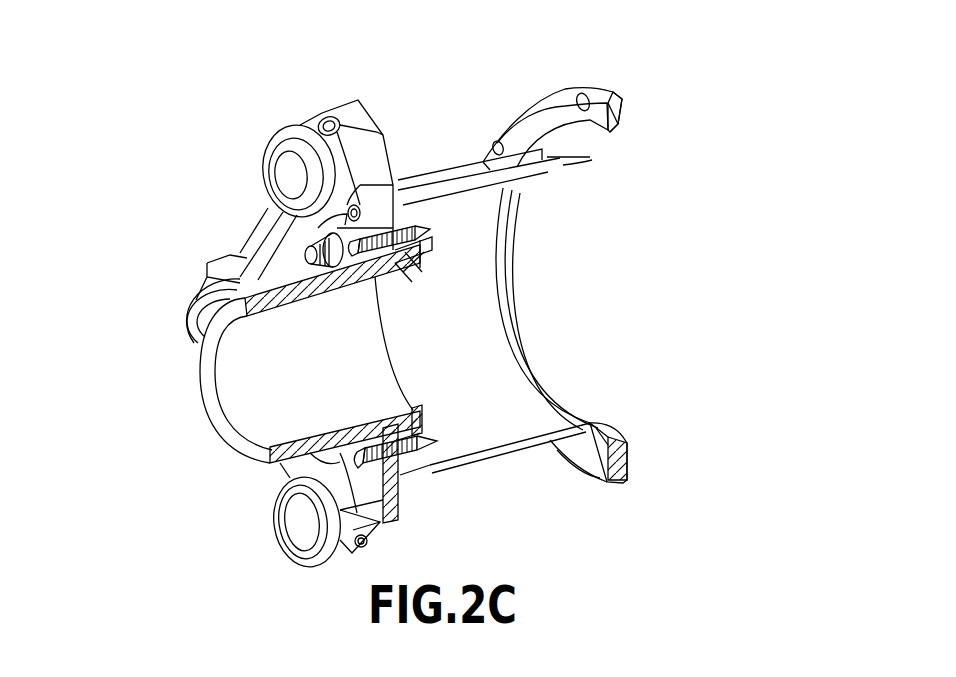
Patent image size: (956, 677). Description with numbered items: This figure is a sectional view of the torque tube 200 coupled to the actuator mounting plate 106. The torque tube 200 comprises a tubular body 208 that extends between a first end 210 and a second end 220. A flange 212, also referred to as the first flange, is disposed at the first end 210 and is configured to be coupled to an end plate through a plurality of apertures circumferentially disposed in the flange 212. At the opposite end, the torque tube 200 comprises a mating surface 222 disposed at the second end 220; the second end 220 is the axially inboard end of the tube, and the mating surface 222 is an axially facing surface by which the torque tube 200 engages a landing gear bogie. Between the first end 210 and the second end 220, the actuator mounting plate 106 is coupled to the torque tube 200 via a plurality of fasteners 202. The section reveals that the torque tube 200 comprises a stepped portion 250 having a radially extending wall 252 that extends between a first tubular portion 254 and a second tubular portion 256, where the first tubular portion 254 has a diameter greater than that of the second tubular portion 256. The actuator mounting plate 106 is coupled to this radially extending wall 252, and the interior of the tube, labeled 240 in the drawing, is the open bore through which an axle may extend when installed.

The actuator mounting plate 106 is at (400, 523).
The torque tube 200 is at (517, 454).
The fasteners 202 is at (433, 229).
The tubular body 208 is at (450, 467).
The first end 210 is at (560, 85).
The flange 212 is at (620, 113).
The second end 220 is at (223, 433).
The mating surface 222 is at (208, 372).
The cavity 240 is at (322, 373).
The stepped portion 250 is at (428, 258).
The radially extending wall 252 is at (420, 266).
The first tubular portion 254 is at (547, 183).
The second tubular portion 256 is at (328, 290).